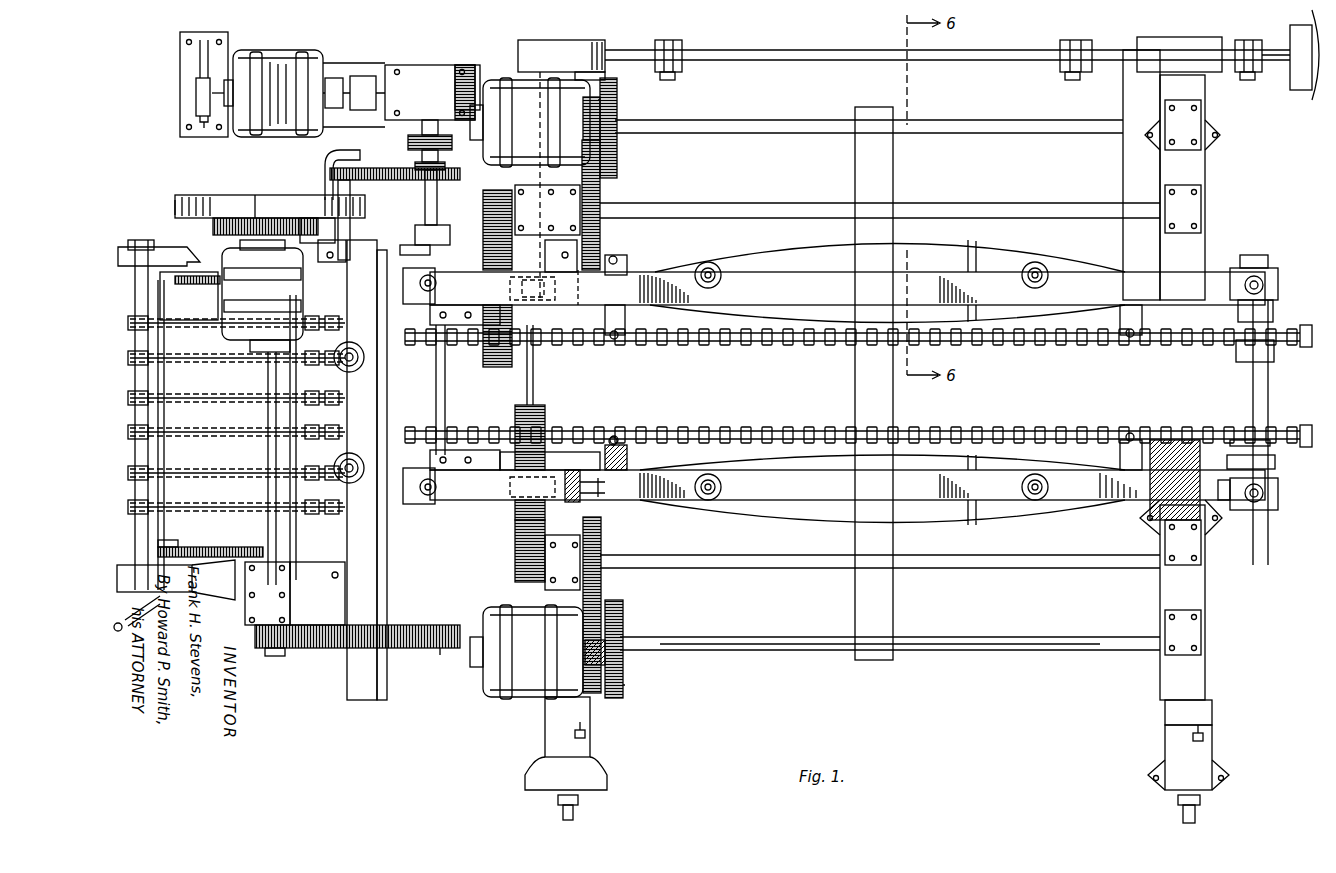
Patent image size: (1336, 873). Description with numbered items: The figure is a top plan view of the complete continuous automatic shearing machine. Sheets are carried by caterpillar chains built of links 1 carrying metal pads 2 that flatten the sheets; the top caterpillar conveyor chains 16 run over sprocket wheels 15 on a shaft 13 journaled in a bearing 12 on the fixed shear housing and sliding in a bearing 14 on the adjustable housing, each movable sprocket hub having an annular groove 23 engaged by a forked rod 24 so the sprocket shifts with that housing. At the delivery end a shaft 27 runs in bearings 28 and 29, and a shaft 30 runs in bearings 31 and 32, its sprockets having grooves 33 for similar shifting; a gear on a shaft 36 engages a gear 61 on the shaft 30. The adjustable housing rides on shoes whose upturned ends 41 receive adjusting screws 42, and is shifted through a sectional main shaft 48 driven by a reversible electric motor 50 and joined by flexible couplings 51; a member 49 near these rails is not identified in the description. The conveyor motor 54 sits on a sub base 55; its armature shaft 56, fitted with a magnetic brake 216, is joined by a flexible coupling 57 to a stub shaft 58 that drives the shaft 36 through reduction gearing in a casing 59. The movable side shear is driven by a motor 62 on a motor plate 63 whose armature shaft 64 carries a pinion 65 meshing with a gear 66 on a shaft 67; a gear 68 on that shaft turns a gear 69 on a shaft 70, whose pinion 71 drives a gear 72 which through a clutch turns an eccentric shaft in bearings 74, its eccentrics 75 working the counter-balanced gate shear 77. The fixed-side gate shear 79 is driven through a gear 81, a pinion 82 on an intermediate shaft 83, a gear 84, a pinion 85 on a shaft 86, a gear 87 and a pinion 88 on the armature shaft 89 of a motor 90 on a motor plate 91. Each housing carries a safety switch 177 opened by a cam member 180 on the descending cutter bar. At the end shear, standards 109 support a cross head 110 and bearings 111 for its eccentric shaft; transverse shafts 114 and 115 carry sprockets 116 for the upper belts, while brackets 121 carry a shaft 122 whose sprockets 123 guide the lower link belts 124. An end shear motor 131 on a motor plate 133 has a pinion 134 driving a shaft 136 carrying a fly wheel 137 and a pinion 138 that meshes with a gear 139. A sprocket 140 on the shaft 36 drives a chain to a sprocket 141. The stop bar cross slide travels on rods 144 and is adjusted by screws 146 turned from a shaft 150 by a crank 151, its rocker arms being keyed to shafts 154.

The links 1 is at (888, 343).
The metal pads 2 is at (852, 345).
The bearing 12 is at (1280, 283).
The shaft 13 is at (1270, 535).
The bearing 14 is at (1250, 510).
The sprocket wheels 15 is at (1312, 330).
The top caterpillar conveyor chains 16 is at (852, 386).
The annular groove 23 is at (1275, 460).
The forked rod 24 is at (1238, 440).
The shaft 27 is at (520, 398).
The bearing 28 is at (510, 286).
The bearing 29 is at (510, 490).
The shaft 30 is at (450, 412).
The bearing 31 is at (436, 283).
The bearing 32 is at (426, 505).
The grooves 33 is at (425, 458).
The sprocket shaft 36 is at (438, 213).
The upturned end 41 is at (1212, 712).
The adjusting screws 42 is at (585, 735).
The sectional main shaft 48 is at (933, 60).
The frame rail 49 is at (966, 637).
The reversible electric motor 50 is at (1290, 88).
The flexible couplings 51 is at (670, 72).
The electric motor 54 is at (294, 52).
The sub base 55 is at (352, 70).
The armature shaft 56 is at (232, 78).
The flexible coupling 57 is at (365, 110).
The stub shaft 58 is at (388, 64).
The casing 59 is at (430, 100).
The gear 61 is at (450, 235).
The electric driving motor 62 is at (533, 652).
The motor plate 63 is at (486, 688).
The armature shaft 64 is at (625, 622).
The pinion 65 is at (625, 665).
The gear 66 is at (625, 683).
The shaft 67 is at (725, 637).
The gear 68 is at (612, 712).
The gear 69 is at (602, 590).
The shaft 70 is at (635, 555).
The pinion 71 is at (515, 545).
The gear 72 is at (515, 513).
The bearings 74 is at (575, 468).
The eccentrics 75 is at (625, 345).
The counter-balanced gate shear 77 is at (882, 490).
The gate shear 79 is at (887, 281).
The gear 81 is at (483, 360).
The pinion 82 is at (506, 190).
The intermediate shaft 83 is at (658, 205).
The gear 84 is at (600, 194).
The pinion 85 is at (561, 60).
The shaft 86 is at (706, 120).
The gear 87 is at (617, 98).
The pinion 88 is at (617, 107).
The armature shaft 89 is at (598, 122).
The electric motor 90 is at (530, 186).
The motor plate 91 is at (488, 85).
The standards 109 is at (290, 222).
The cross head 110 is at (358, 702).
The bearings 111 is at (335, 252).
The transverse shaft 114 is at (352, 206).
The transverse shaft 115 is at (348, 480).
The sprockets 116 is at (345, 372).
The brackets 121 is at (140, 242).
The shaft 122 is at (135, 462).
The sprockets 123 is at (135, 320).
The link belts 124 is at (215, 395).
The electric motor 131 is at (225, 215).
The motor plate 133 is at (215, 298).
The pinion 134 is at (239, 206).
The shaft 136 is at (268, 652).
The fly wheel 137 is at (178, 198).
The pinion 138 is at (255, 642).
The gear 139 is at (415, 645).
The sprocket 140 is at (442, 170).
The sprocket 141 is at (348, 183).
The rods 144 is at (172, 250).
The screws 146 is at (232, 545).
The shaft 150 is at (165, 500).
The crank 151 is at (140, 612).
The shafts 154 is at (178, 545).
The safety switch 177 is at (585, 500).
The cam member 180 is at (625, 265).
The magnetic brake 216 is at (222, 32).